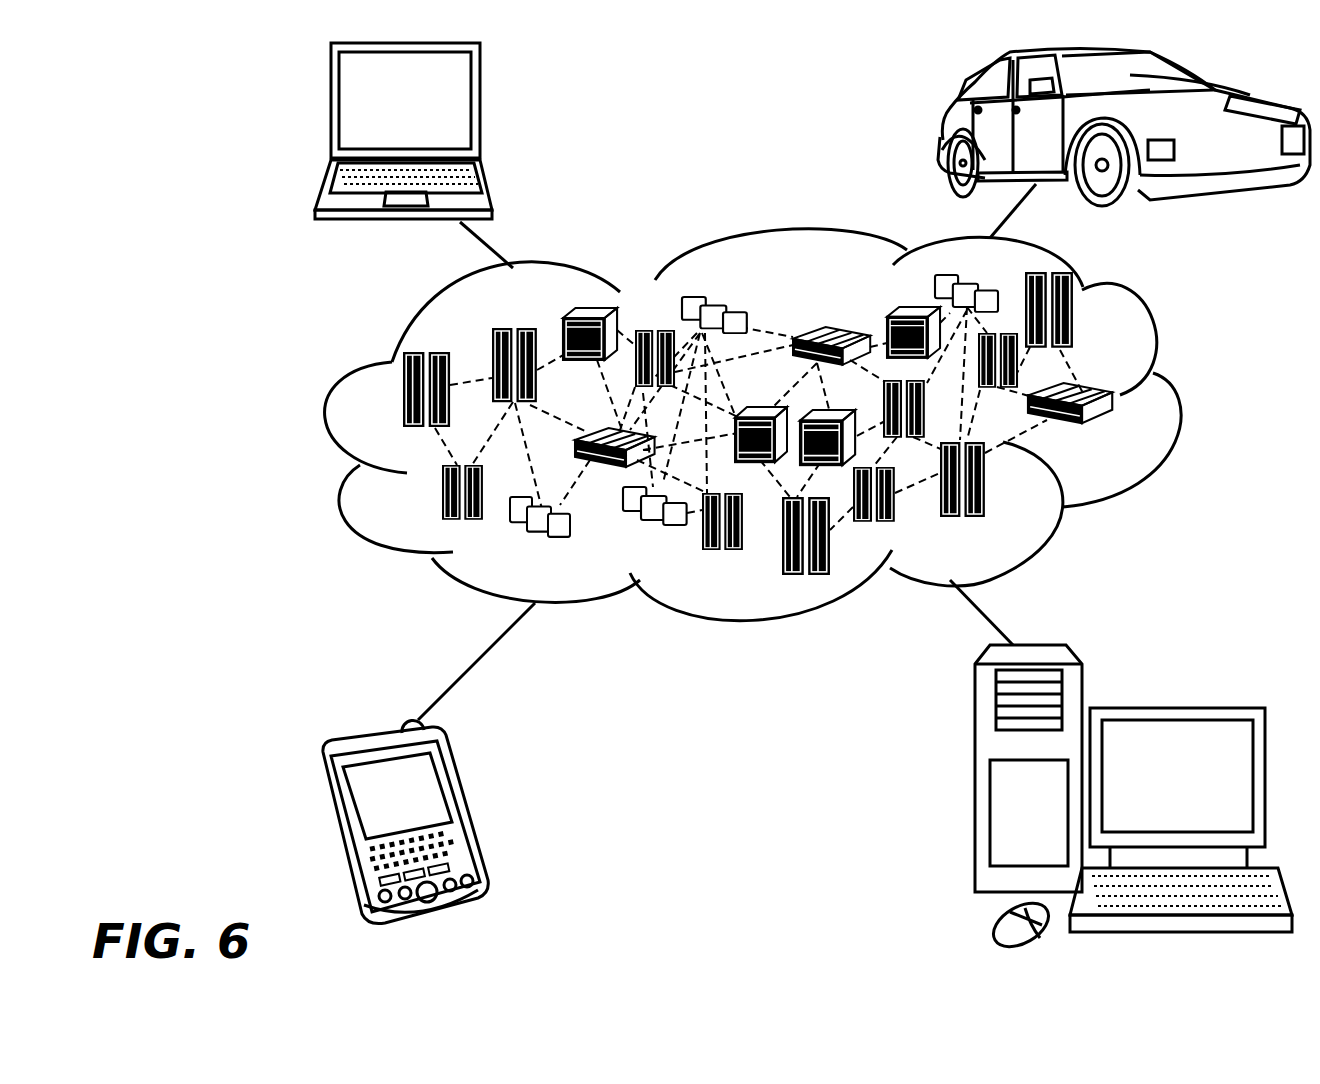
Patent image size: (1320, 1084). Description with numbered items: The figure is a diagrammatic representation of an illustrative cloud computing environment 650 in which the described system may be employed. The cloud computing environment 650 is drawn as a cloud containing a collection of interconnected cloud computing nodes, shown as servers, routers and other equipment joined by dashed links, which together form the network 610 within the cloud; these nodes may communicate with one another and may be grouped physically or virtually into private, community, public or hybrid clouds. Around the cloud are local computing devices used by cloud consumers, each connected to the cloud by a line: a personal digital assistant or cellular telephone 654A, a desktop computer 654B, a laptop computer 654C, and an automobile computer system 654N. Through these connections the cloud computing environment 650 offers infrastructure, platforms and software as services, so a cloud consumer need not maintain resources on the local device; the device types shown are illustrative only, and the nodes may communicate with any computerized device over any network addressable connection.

The cloud computing environment 650 is at (1178, 399).
The network 610 is at (1113, 432).
The personal digital assistant or cellular telephone 654A is at (468, 807).
The desktop computer 654B is at (1175, 708).
The laptop computer 654C is at (482, 112).
The automobile computer system 654N is at (940, 128).